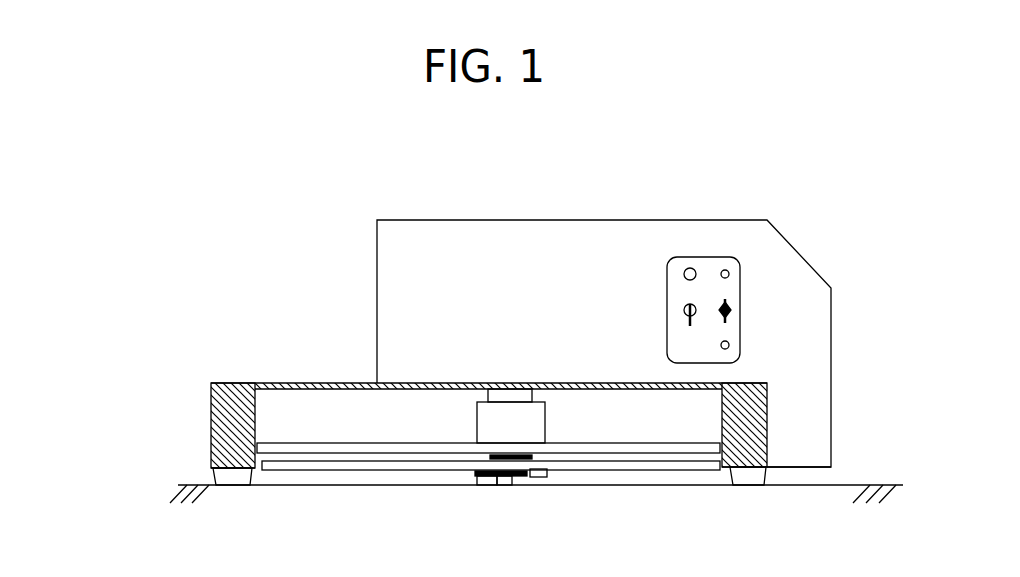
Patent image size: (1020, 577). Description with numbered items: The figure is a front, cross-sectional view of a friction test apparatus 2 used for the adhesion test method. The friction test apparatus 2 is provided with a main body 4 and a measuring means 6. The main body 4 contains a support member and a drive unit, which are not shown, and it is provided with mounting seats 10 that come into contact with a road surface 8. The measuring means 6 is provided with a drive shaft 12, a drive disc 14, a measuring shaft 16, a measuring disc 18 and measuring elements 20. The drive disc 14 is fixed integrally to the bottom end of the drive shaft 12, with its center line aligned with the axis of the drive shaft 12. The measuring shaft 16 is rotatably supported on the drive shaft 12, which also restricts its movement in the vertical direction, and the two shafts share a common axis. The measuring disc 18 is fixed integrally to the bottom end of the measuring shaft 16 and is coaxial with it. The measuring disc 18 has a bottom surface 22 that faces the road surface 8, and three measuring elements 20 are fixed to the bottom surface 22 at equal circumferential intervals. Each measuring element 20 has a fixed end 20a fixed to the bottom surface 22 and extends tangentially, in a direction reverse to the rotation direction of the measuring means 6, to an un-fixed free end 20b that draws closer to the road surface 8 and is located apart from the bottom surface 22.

The friction test apparatus 2 is at (822, 159).
The main body 4 is at (377, 293).
The measuring means 6 is at (488, 423).
The road surface 8 is at (193, 485).
The mounting seats 10 is at (232, 476).
The drive shaft 12 is at (492, 420).
The drive disc 14 is at (350, 447).
The measuring shaft 16 is at (490, 457).
The measuring disc 18 is at (363, 465).
The measuring element 20 is at (514, 508).
The fixed end 20a is at (547, 473).
The free end 20b is at (477, 475).
The bottom surface 22 is at (491, 504).